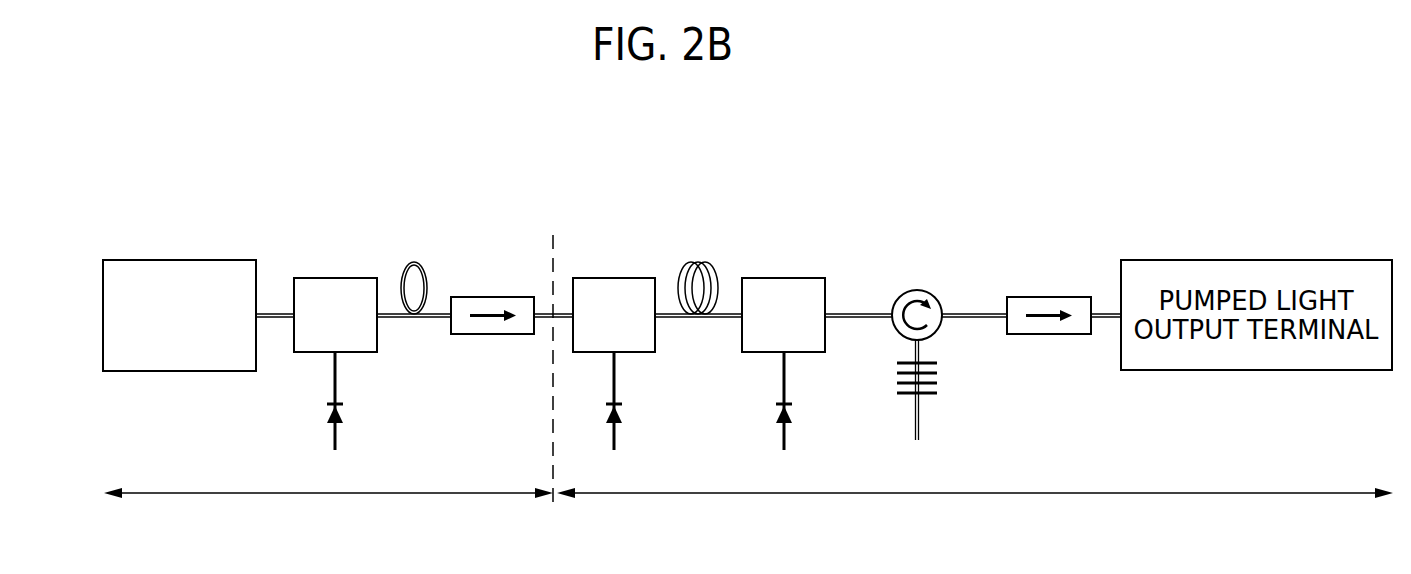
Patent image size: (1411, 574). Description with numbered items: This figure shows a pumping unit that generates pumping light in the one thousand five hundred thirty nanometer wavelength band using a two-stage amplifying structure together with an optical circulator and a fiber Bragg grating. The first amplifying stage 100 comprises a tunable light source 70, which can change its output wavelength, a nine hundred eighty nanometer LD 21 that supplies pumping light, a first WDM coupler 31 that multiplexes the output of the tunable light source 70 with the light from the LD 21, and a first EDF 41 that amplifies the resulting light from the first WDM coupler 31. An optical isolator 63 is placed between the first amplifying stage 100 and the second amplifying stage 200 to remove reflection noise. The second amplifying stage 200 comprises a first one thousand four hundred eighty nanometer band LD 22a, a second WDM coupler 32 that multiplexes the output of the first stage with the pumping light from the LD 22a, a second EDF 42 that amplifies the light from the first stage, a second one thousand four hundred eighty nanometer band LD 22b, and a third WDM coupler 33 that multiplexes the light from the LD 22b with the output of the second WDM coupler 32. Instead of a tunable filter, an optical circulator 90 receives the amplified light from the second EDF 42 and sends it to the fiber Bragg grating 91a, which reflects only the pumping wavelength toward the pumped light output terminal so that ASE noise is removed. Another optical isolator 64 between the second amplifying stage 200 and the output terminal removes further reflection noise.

The tunable light source 70 is at (205, 260).
The first WDM coupler 31 is at (325, 278).
The second WDM coupler 32 is at (605, 278).
The third WDM coupler 33 is at (785, 278).
The 980 nm wavelength LD 21 is at (341, 412).
The first 1,480 nm wavelength band LD 22a is at (620, 412).
The second 1,480 nm wavelength band LD 22b is at (790, 412).
The first EDF 41 is at (421, 266).
The second EDF 42 is at (709, 266).
The optical isolator 63 is at (485, 297).
The optical isolator 64 is at (1040, 297).
The optical circulator 90 is at (924, 292).
The fiber Bragg grating 91a is at (937, 384).
The first amplifying stage 100 is at (329, 493).
The second amplifying stage 200 is at (873, 493).